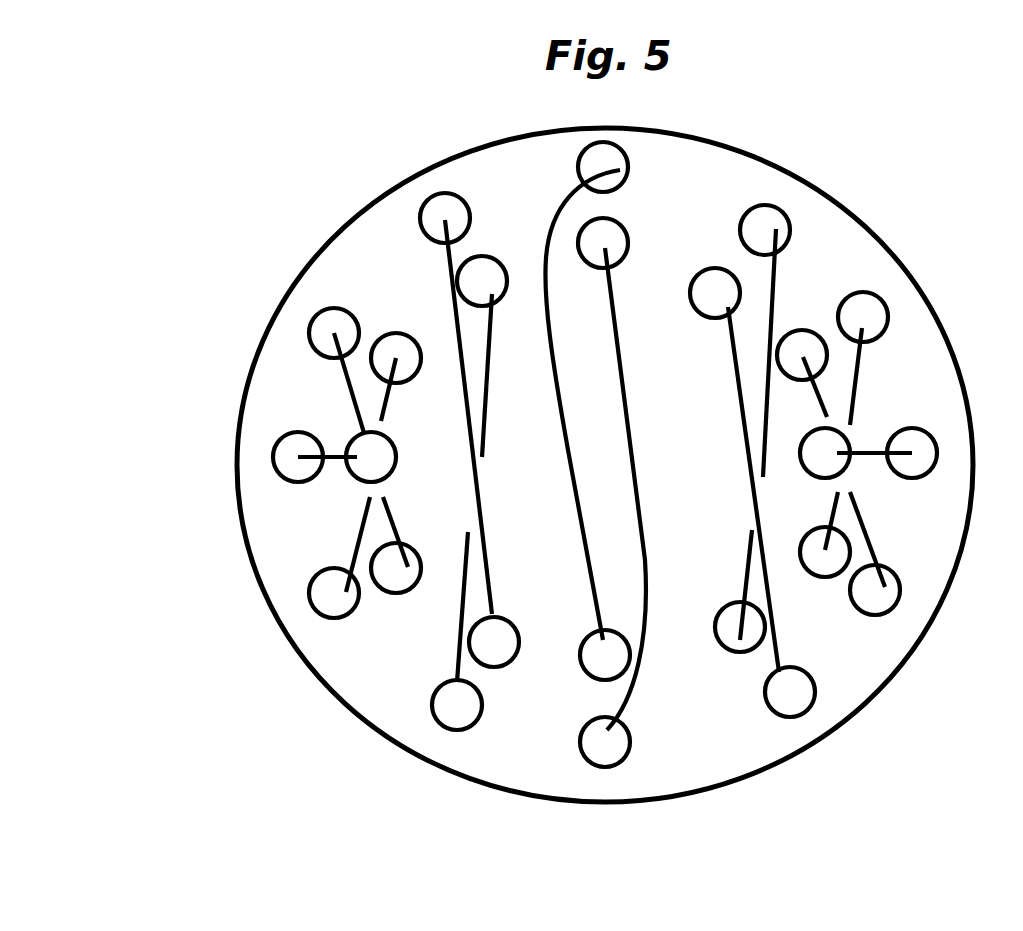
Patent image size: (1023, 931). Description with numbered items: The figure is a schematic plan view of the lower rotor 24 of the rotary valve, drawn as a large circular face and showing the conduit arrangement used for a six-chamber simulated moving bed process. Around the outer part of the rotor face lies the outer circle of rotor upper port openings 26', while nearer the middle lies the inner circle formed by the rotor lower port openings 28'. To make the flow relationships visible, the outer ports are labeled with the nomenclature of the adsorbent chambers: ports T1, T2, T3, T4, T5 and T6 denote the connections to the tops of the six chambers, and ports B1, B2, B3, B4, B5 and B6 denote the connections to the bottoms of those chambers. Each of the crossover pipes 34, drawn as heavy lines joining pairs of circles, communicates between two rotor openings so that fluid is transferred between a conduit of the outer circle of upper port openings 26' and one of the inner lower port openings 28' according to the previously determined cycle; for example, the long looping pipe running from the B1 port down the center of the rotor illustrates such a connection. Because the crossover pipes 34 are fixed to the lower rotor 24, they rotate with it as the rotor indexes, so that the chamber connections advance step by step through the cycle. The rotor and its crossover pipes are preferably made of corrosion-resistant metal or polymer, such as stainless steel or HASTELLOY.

The lower rotor 24 is at (833, 203).
The rotor upper port openings 26' is at (524, 674).
The rotor lower port openings 28' is at (659, 449).
The crossover pipes 34 is at (632, 457).
The rotor port (top of adsorbent chamber 1) T1 is at (427, 197).
The rotor port (top of adsorbent chamber 2) T2 is at (782, 210).
The rotor port (top of adsorbent chamber 3) T3 is at (930, 428).
The rotor port (top of adsorbent chamber 4) T4 is at (802, 678).
The rotor port (top of adsorbent chamber 5) T5 is at (432, 707).
The rotor port (top of adsorbent chamber 6) T6 is at (277, 443).
The rotor port (bottom of adsorbent chamber 1) B1 is at (587, 147).
The rotor port (bottom of adsorbent chamber 2) B2 is at (877, 293).
The rotor port (bottom of adsorbent chamber 3) B3 is at (890, 607).
The rotor port (bottom of adsorbent chamber 4) B4 is at (627, 760).
The rotor port (bottom of adsorbent chamber 5) B5 is at (314, 576).
The rotor port (bottom of adsorbent chamber 6) B6 is at (318, 308).